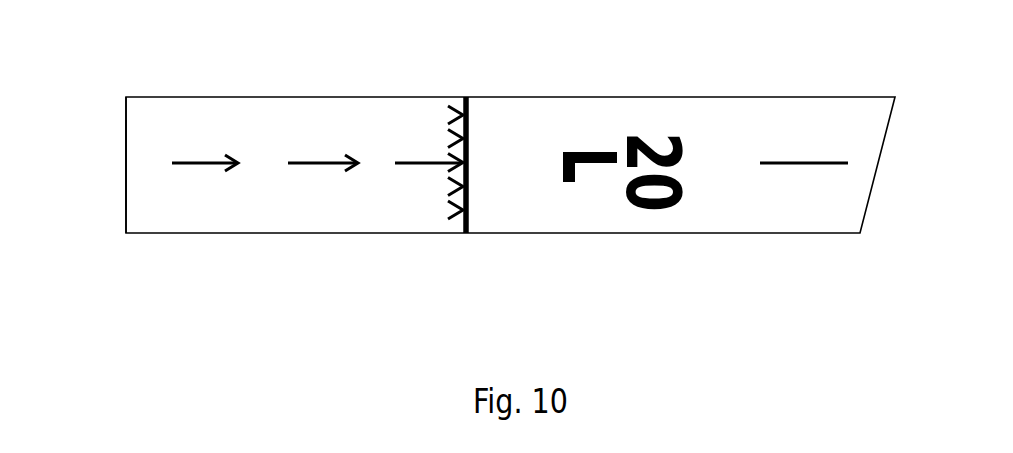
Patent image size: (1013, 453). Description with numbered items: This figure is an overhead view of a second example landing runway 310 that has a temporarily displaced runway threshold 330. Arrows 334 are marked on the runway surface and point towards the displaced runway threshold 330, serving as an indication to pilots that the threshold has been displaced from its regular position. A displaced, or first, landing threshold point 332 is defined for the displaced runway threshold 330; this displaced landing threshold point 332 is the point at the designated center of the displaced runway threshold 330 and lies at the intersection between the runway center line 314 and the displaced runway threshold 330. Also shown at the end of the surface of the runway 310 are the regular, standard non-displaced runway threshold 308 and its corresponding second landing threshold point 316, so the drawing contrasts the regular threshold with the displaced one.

The runway threshold 308 is at (126, 117).
The landing runway 310 is at (677, 97).
The runway center line 314 is at (827, 163).
The landing threshold point 316 is at (126, 163).
The displaced runway threshold 330 is at (468, 122).
The displaced landing threshold point 332 is at (468, 163).
The arrows 334 is at (322, 163).